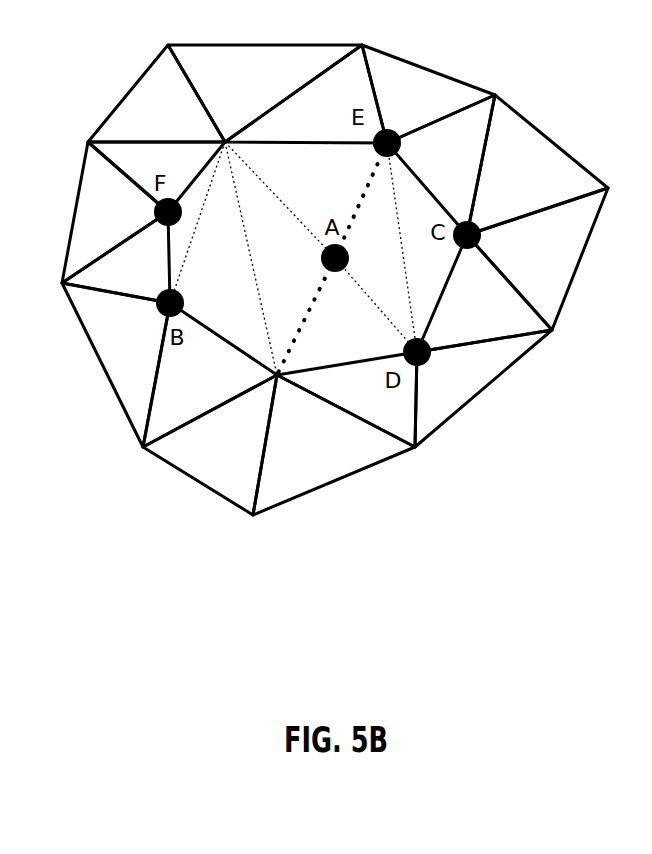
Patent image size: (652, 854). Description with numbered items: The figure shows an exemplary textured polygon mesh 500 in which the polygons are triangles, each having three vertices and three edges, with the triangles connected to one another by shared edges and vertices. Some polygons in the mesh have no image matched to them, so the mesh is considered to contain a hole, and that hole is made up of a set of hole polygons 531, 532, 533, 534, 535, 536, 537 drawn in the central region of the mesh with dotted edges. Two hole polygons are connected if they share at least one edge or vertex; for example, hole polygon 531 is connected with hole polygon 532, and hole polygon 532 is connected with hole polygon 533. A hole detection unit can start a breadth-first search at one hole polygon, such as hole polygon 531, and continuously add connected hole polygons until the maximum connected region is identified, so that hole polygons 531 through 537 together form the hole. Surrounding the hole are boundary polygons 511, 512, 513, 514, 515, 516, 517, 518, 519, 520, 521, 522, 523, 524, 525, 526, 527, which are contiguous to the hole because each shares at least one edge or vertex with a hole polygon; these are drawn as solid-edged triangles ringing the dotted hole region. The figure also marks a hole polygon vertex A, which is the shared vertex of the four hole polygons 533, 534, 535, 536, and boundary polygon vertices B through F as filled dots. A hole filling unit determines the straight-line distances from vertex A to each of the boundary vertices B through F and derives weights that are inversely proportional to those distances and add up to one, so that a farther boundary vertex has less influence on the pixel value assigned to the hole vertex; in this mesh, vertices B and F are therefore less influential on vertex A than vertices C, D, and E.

The textured polygon mesh 500 is at (358, 607).
The boundary polygon 511 is at (116, 257).
The boundary polygon 512 is at (116, 365).
The boundary polygon 513 is at (210, 375).
The boundary polygon 514 is at (210, 445).
The boundary polygon 515 is at (334, 445).
The boundary polygon 516 is at (347, 399).
The boundary polygon 517 is at (483, 388).
The boundary polygon 518 is at (484, 293).
The boundary polygon 519 is at (537, 259).
The boundary polygon 520 is at (537, 165).
The boundary polygon 521 is at (441, 165).
The boundary polygon 522 is at (428, 94).
The boundary polygon 523 is at (306, 94).
The boundary polygon 524 is at (265, 93).
The boundary polygon 525 is at (156, 93).
The boundary polygon 526 is at (156, 177).
The boundary polygon 527 is at (115, 212).
The hole polygon 531 is at (197, 222).
The hole polygon 532 is at (243, 258).
The hole polygon 533 is at (280, 209).
The hole polygon 534 is at (342, 200).
The hole polygon 535 is at (376, 301).
The hole polygon 536 is at (323, 316).
The hole polygon 537 is at (417, 247).